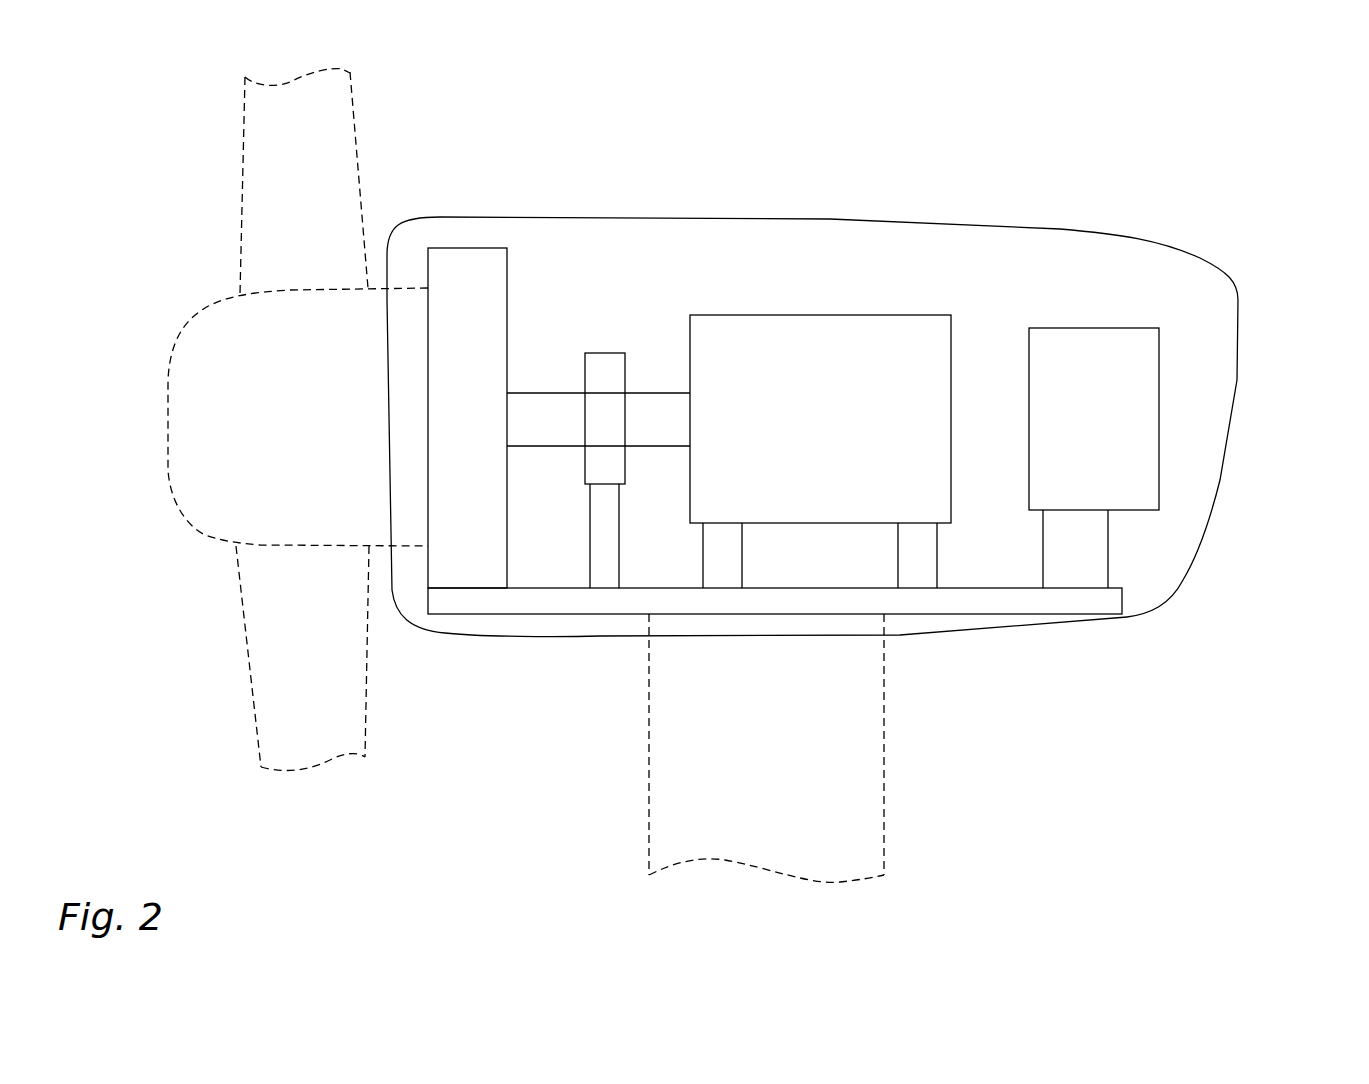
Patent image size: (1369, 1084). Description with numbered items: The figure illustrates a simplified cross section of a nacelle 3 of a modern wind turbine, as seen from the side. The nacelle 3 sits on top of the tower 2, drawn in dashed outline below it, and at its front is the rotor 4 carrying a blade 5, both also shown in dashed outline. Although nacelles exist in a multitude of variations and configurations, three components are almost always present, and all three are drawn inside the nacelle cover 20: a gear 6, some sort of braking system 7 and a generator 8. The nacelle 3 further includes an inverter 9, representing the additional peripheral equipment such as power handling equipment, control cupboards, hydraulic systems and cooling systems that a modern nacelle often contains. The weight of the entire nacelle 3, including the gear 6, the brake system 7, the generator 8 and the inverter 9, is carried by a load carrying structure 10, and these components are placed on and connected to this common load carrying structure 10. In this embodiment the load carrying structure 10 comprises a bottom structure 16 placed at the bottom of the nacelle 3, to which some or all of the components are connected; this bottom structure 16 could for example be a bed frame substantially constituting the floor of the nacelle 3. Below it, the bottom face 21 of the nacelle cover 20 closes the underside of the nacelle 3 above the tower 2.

The tower 2 is at (820, 822).
The nacelle 3 is at (1228, 203).
The rotor 4 is at (216, 385).
The blade 5 is at (302, 170).
The gear 6 is at (453, 280).
The brake system 7 is at (603, 377).
The generator 8 is at (755, 358).
The inverter 9 is at (1072, 363).
The load carrying structure 10 is at (1055, 602).
The bottom structure 16 is at (945, 603).
The nacelle cover 20 is at (1238, 295).
The bottom face 21 is at (522, 637).